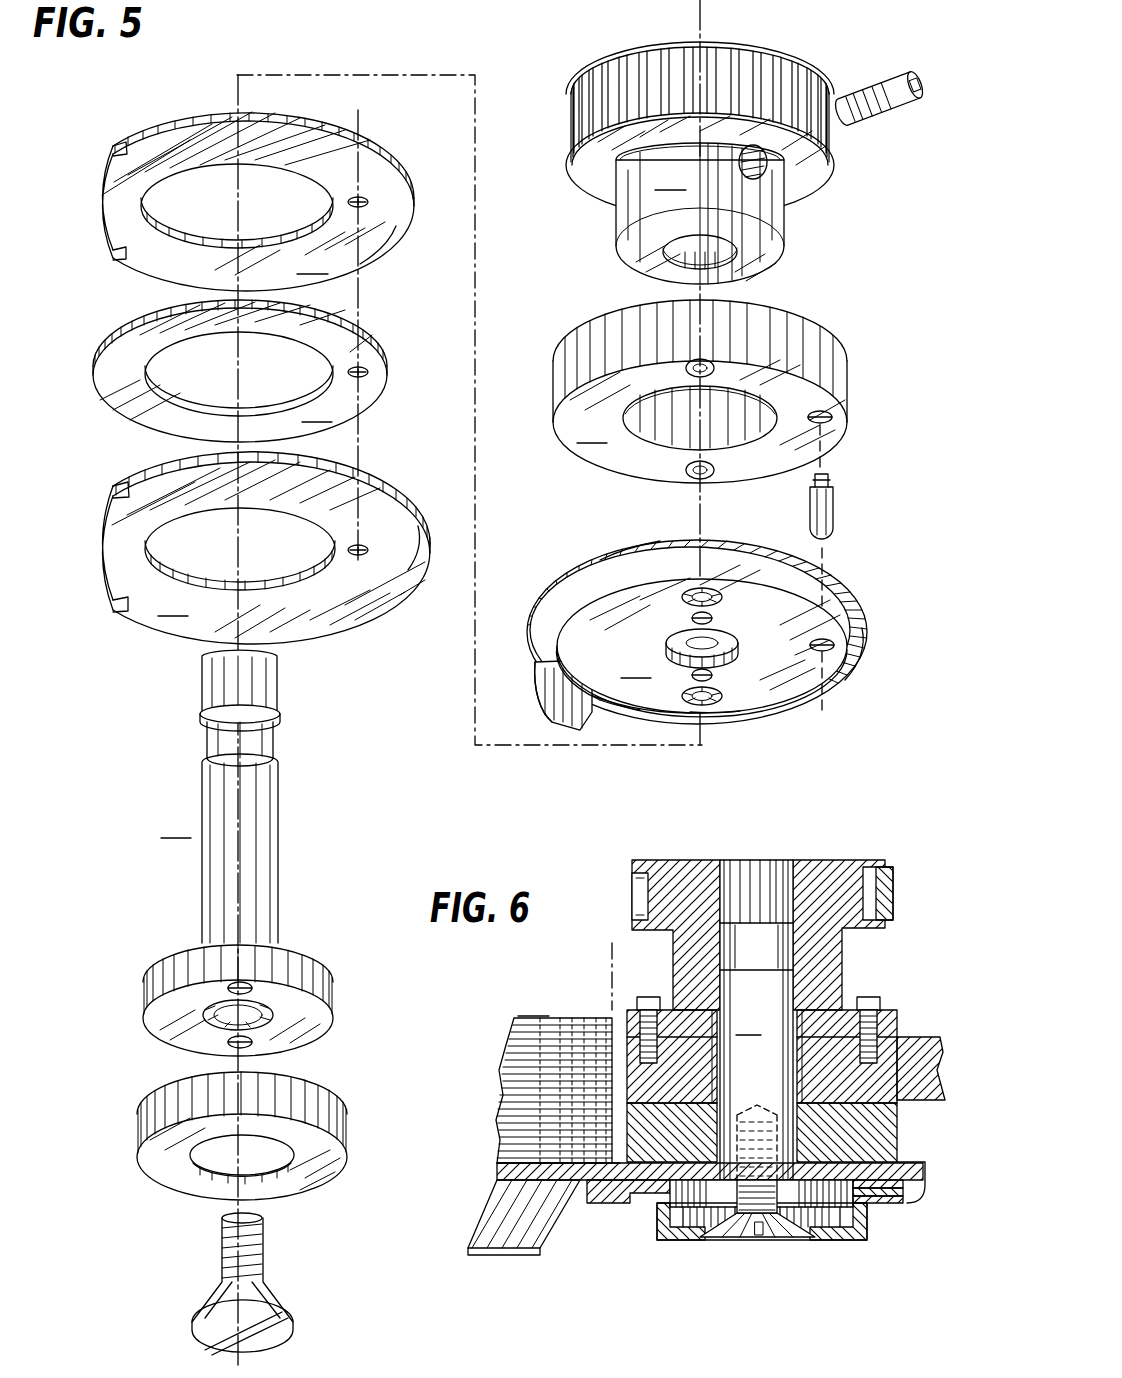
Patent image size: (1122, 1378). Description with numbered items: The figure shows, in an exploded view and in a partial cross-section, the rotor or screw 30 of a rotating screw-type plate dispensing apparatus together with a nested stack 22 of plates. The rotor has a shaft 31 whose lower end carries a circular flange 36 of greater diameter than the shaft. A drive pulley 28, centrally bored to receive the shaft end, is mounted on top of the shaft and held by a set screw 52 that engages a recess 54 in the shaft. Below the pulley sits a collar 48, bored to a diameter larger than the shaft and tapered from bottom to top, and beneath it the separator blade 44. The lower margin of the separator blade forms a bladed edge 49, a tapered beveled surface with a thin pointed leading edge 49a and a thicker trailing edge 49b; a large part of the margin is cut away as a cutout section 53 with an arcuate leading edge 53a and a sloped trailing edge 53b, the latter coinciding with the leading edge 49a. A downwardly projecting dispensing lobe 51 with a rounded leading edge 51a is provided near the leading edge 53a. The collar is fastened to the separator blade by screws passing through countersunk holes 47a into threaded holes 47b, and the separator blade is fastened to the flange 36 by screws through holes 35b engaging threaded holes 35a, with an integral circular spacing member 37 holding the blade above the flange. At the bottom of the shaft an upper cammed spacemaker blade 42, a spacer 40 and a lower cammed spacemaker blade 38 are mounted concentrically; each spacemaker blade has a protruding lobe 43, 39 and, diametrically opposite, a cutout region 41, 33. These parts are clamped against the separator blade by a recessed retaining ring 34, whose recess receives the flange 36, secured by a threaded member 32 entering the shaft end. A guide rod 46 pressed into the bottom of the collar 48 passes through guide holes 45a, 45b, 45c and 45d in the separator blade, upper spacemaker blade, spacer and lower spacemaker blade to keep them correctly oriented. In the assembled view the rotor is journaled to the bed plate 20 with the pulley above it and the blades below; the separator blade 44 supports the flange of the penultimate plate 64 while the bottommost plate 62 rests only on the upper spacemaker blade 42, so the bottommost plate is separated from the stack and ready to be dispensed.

In FIG. 6, the bed plate 20 is at (924, 1040).
In FIG. 6, the stack 22 is at (554, 1074).
In FIG. 5, the drive pulley 28 is at (700, 163).
In FIG. 6, the drive pulley 28 is at (818, 878).
In FIG. 5, the rotor 30 is at (247, 796).
In FIG. 5, the shaft 31 is at (256, 850).
In FIG. 6, the shaft 31 is at (756, 1020).
In FIG. 5, the threaded member 32 is at (288, 1318).
In FIG. 6, the threaded member 32 is at (774, 1238).
In FIG. 5, the cutout region 33 is at (120, 480).
In FIG. 5, the recessed retaining ring 34 is at (314, 1098).
In FIG. 6, the recessed retaining ring 34 is at (839, 1238).
In FIG. 5, the holes in flange 35a is at (233, 986).
In FIG. 5, the holes in separator blade 35b is at (690, 620).
In FIG. 5, the circular flange 36 is at (334, 974).
In FIG. 6, the circular flange 36 is at (697, 1200).
In FIG. 5, the circular spacing member 37 is at (577, 612).
In FIG. 6, the circular spacing member 37 is at (623, 1200).
In FIG. 5, the lower cammed spacemaker blade 38 is at (267, 548).
In FIG. 6, the lower cammed spacemaker blade 38 is at (879, 1204).
In FIG. 5, the lobe 39 is at (418, 538).
In FIG. 5, the spacer 40 is at (240, 371).
In FIG. 6, the spacer 40 is at (906, 1200).
In FIG. 5, the cutout region 41 is at (114, 150).
In FIG. 5, the upper cammed spacemaker blade 42 is at (258, 201).
In FIG. 6, the upper cammed spacemaker blade 42 is at (923, 1188).
In FIG. 5, the lobe 43 is at (398, 228).
In FIG. 5, the separator blade 44 is at (702, 641).
In FIG. 6, the separator blade 44 is at (873, 1168).
In FIG. 5, the guide hole 45a is at (832, 651).
In FIG. 5, the guide hole 45b is at (366, 198).
In FIG. 5, the guide hole 45c is at (368, 374).
In FIG. 5, the guide hole 45d is at (366, 547).
In FIG. 5, the guide rod 46 is at (835, 509).
In FIG. 5, the holes in separator blade 47a is at (706, 704).
In FIG. 5, the threaded holes in collar 47b is at (706, 478).
In FIG. 5, the collar 48 is at (700, 391).
In FIG. 6, the collar 48 is at (866, 1096).
In FIG. 5, the bladed edge 49 is at (857, 598).
In FIG. 6, the bladed edge 49 is at (545, 1135).
In FIG. 5, the leading edge 49a is at (866, 605).
In FIG. 5, the trailing edge 49b is at (650, 550).
In FIG. 5, the dispensing lobe 51 is at (552, 718).
In FIG. 5, the rounded leading edge 51a is at (541, 686).
In FIG. 5, the set screw 52 is at (874, 128).
In FIG. 5, the cutout section 53 is at (716, 704).
In FIG. 5, the leading edge of cutout section 53a is at (614, 708).
In FIG. 5, the sloped trailing edge 53b is at (863, 628).
In FIG. 5, the recess 54 is at (274, 742).
In FIG. 6, the bottommost plate 62 is at (543, 1256).
In FIG. 6, the penultimate plate 64 is at (500, 1172).